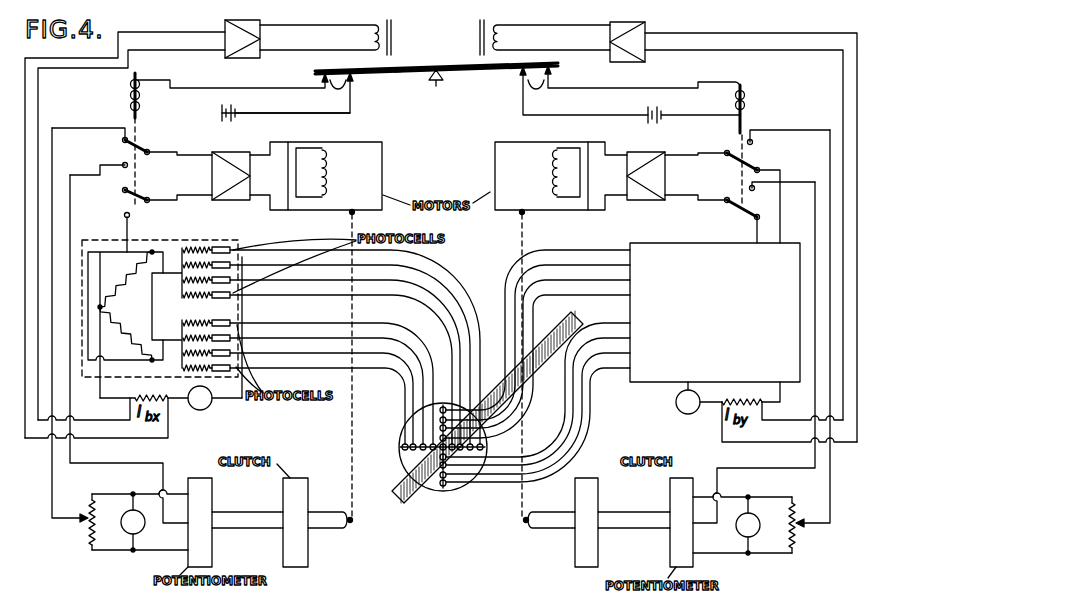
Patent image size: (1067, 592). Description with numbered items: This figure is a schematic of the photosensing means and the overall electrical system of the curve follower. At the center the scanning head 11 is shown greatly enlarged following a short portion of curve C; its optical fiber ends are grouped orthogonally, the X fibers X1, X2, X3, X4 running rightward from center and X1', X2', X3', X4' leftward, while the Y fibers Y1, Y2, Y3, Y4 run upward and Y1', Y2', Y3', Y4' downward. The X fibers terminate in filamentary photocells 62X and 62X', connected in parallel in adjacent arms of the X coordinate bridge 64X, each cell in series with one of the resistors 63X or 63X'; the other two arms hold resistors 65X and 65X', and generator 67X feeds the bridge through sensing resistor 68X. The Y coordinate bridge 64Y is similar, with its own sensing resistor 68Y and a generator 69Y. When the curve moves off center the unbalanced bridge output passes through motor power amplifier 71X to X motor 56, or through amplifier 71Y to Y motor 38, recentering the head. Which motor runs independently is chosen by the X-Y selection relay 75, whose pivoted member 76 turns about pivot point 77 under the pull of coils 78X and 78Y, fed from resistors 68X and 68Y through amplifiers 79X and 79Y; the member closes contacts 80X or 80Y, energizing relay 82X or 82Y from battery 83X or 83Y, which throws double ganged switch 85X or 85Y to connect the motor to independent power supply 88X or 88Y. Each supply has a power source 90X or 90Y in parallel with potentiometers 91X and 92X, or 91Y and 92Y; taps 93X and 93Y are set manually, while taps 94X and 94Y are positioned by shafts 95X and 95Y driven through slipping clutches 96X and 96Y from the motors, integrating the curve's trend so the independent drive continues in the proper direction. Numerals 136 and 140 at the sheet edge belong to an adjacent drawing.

The scanning head 11 is at (394, 472).
The curve C is at (498, 385).
The Y motor 38 is at (500, 142).
The X motor 56 is at (362, 142).
The X-Y selection relay 75 is at (432, 61).
The pivoted member 76 is at (398, 72).
The pivot point 77 is at (435, 87).
The coil 78X is at (372, 40).
The coil 78Y is at (500, 40).
The amplifier 79X is at (250, 58).
The amplifier 79Y is at (638, 62).
The contacts 80X is at (245, 93).
The contacts 80Y is at (630, 90).
The relay 82X is at (128, 98).
The relay 82Y is at (745, 110).
The battery 83X is at (222, 118).
The battery 83Y is at (650, 120).
The double ganged switch 85X is at (147, 198).
The double ganged switch 85Y is at (733, 198).
The amplifier 71X is at (250, 201).
The amplifier 71Y is at (647, 201).
The X coordinate bridge 64X is at (190, 240).
The Y coordinate bridge circuit 64Y is at (735, 336).
The filamentary photocells 62X is at (251, 269).
The filamentary photocells 62X' is at (229, 347).
The resistors 63X is at (175, 273).
The resistors 63X' is at (175, 345).
The resistor 65X is at (125, 279).
The resistor 65X' is at (126, 333).
The resistor 68X is at (148, 396).
The sensing resistor 68Y is at (760, 395).
The generator 67X is at (204, 411).
The Y galvanometer 69Y is at (688, 414).
The independent power supply 88X is at (130, 552).
The independent power supply 88Y is at (768, 556).
The power source 90X is at (121, 522).
The power source 90Y is at (758, 520).
The potentiometer 91X is at (88, 534).
The potentiometer 91Y is at (798, 540).
The potentiometer 92X is at (212, 556).
The potentiometer 92Y is at (680, 540).
The movable tap 93X is at (87, 514).
The movable tap 93Y is at (806, 516).
The movable tap 94X is at (188, 523).
The movable tap 94Y is at (700, 524).
The shaft 95X is at (250, 502).
The shaft 95Y is at (640, 503).
The clutch 96X is at (296, 478).
The clutch 96Y is at (610, 462).
The X fiber X1 is at (469, 473).
The X fiber X2 is at (485, 473).
The X fiber X3 is at (507, 470).
The X fiber X4 is at (494, 447).
The X fiber X1' is at (405, 432).
The X fiber X2' is at (395, 440).
The X fiber X3' is at (390, 462).
The X fiber X4' is at (384, 454).
The Y fiber Y1 is at (409, 410).
The Y fiber Y2 is at (409, 394).
The Y fiber Y3 is at (433, 379).
The Y fiber Y4 is at (441, 397).
The Y fiber Y1' is at (425, 484).
The Y fiber Y2' is at (433, 495).
The Y fiber Y3' is at (467, 504).
The Y fiber Y4' is at (454, 501).
The adjacent figure element 136 is at (482, 584).
The adjacent figure element 140 is at (347, 585).